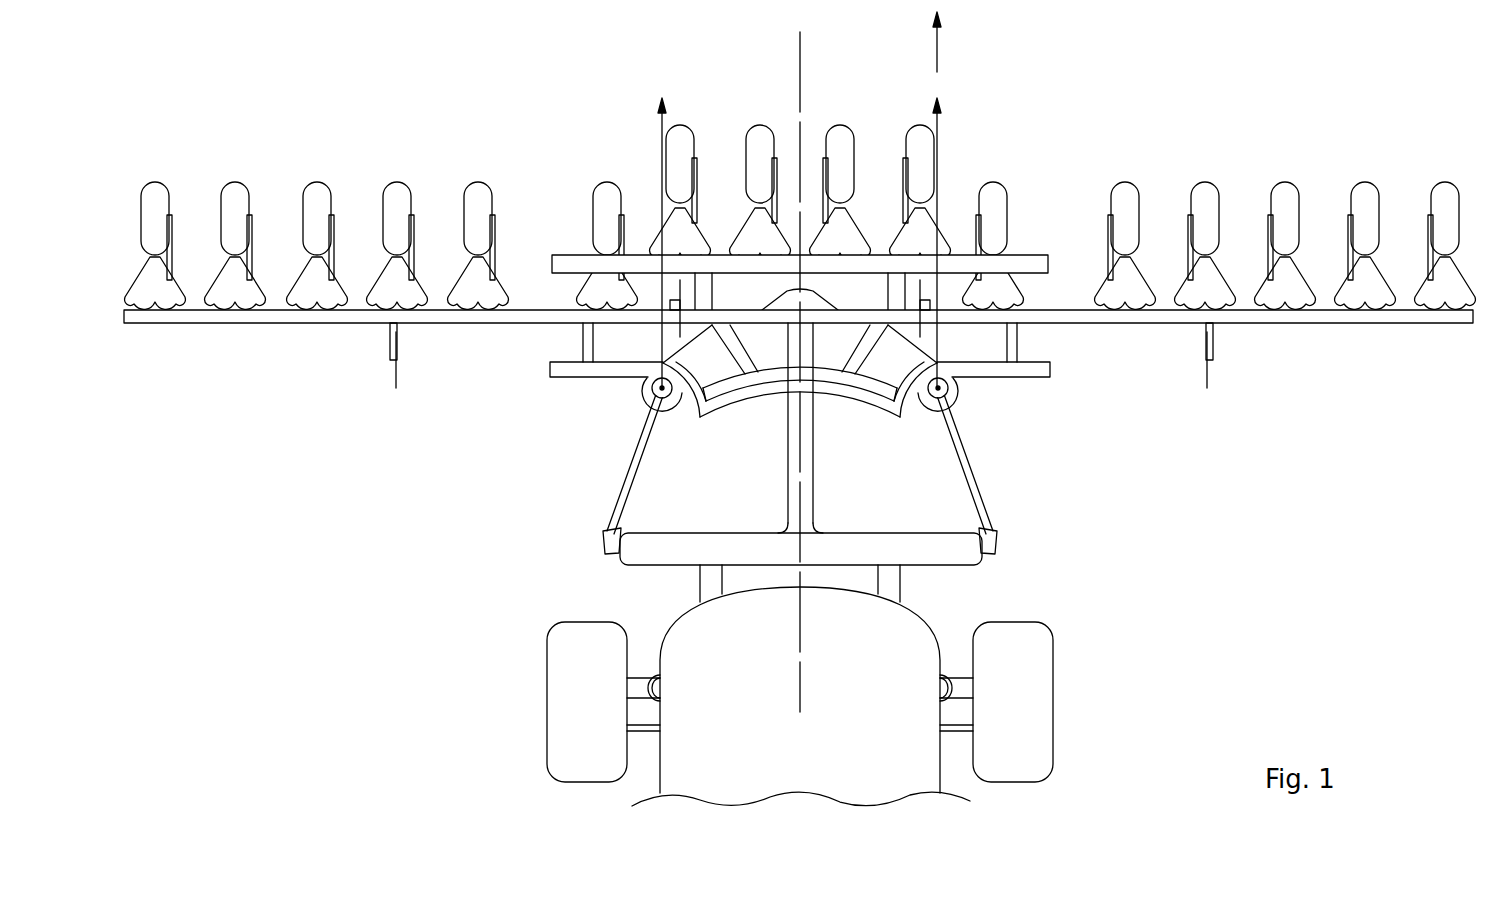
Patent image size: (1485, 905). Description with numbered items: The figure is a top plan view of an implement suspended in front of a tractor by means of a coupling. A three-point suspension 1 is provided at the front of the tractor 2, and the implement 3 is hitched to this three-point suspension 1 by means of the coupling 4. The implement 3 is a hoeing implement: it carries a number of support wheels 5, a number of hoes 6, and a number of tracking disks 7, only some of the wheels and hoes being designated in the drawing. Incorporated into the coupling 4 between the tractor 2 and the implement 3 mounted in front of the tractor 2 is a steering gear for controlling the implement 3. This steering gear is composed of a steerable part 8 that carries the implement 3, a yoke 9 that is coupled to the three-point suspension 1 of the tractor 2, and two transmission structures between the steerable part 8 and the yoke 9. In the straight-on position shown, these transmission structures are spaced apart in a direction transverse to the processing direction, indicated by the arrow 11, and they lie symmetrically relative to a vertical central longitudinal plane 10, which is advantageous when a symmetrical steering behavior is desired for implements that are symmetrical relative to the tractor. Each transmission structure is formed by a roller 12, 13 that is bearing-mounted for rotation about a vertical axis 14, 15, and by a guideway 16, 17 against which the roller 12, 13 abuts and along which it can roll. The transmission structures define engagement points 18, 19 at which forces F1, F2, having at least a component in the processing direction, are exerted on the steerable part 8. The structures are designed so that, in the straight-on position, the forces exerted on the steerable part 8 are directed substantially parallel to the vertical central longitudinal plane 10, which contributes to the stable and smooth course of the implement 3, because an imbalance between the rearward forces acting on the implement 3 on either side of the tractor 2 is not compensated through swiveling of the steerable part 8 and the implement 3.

The three-point suspension 1 is at (1004, 492).
The tractor 2 is at (1079, 702).
The implement 3 is at (1171, 148).
The coupling 4 is at (1076, 370).
The support wheels 5 is at (247, 182).
The hoes 6 is at (317, 302).
The tracking disks 7 is at (398, 368).
The steerable part 8 is at (1022, 384).
The yoke 9 is at (633, 394).
The vertical central longitudinal plane 10 is at (802, 82).
The processing direction 11 is at (939, 50).
The roller 12 is at (650, 402).
The roller 13 is at (947, 395).
The vertical axis 14 is at (647, 388).
The vertical axis 15 is at (948, 392).
The guideway 16 is at (678, 403).
The guideway 17 is at (975, 376).
The engagement point 18 is at (660, 384).
The engagement point 19 is at (940, 384).
The force F1 is at (660, 128).
The force F2 is at (939, 128).